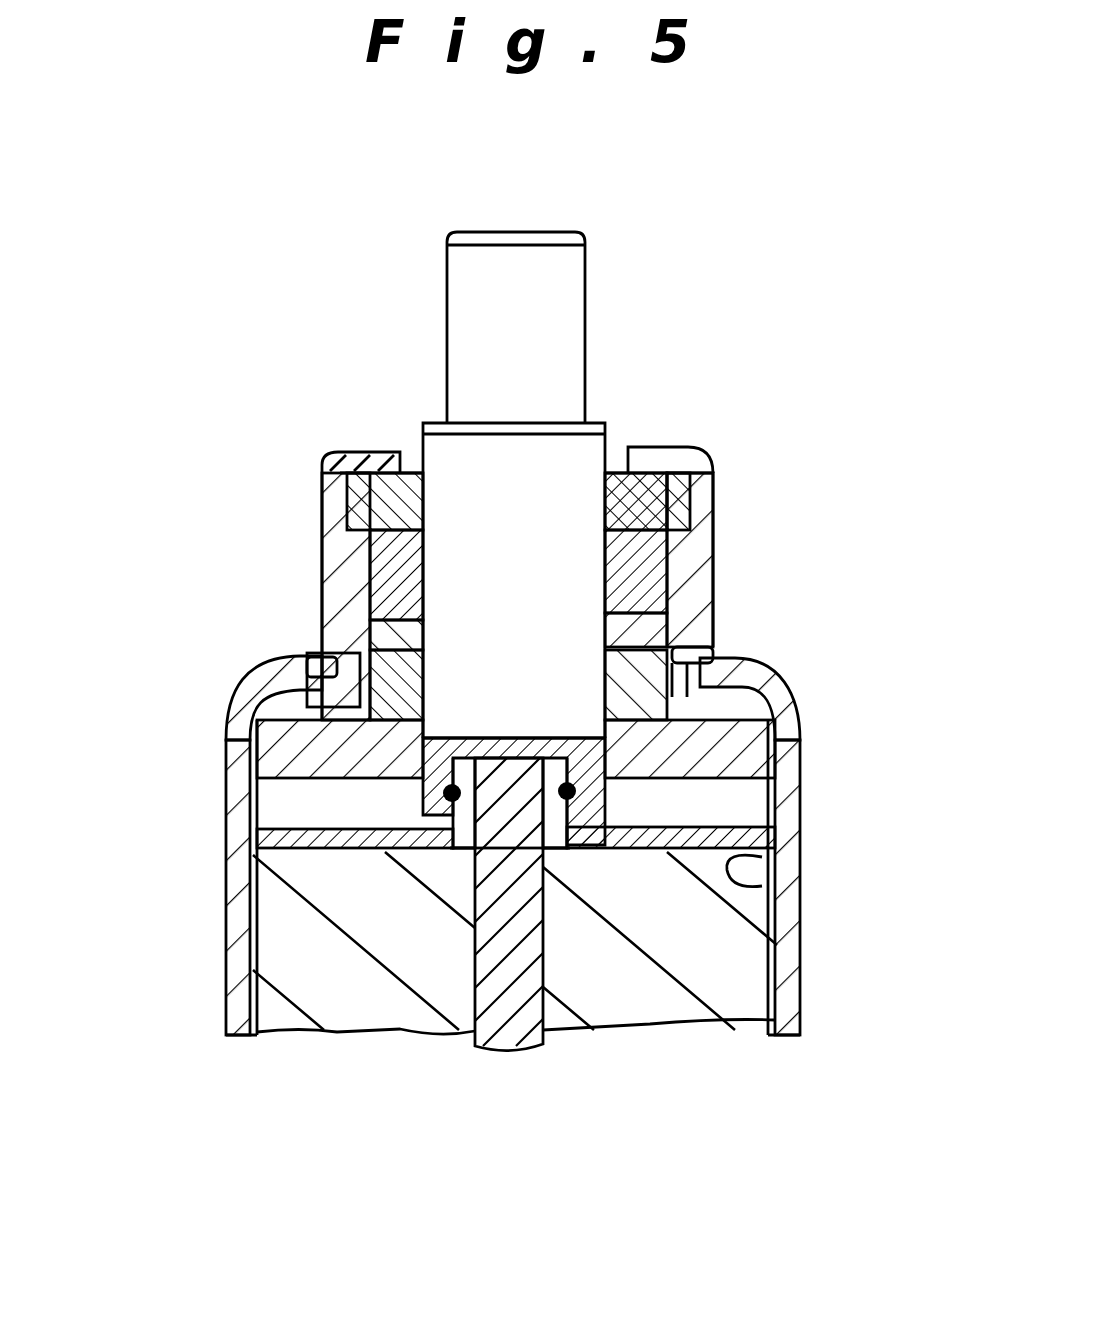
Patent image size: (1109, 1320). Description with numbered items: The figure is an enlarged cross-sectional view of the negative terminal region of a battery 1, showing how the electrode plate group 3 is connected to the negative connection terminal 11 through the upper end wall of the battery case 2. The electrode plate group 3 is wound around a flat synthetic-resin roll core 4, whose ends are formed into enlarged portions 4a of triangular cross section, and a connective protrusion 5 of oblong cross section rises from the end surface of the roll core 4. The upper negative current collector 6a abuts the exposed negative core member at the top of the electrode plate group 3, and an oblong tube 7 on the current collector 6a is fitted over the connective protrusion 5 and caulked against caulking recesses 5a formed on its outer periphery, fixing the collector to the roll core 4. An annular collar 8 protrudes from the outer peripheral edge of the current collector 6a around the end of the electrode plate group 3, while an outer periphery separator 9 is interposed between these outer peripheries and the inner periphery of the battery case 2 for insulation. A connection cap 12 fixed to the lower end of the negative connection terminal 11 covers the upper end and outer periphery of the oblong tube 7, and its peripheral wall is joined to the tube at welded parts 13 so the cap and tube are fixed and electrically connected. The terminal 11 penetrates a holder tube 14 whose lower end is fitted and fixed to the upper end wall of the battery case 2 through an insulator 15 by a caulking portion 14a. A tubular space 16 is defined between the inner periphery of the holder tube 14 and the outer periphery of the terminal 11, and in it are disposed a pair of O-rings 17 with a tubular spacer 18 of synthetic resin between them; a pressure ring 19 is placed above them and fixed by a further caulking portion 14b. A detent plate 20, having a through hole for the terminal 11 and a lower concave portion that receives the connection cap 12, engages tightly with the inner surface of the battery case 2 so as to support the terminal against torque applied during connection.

The battery 1 is at (508, 819).
The battery case 2 is at (798, 1003).
The electrode plate group 3 is at (377, 950).
The roll core 4 is at (517, 1032).
The enlarged portions 4a is at (547, 863).
The connective protrusion 5 is at (447, 850).
The caulking recesses 5a is at (497, 858).
The current collector 6a is at (440, 850).
The oblong tubes 7 is at (417, 850).
The annular collars 8 is at (798, 888).
The outer periphery separator 9 is at (253, 1000).
The negative connection terminal 11 is at (535, 340).
The connection cap 12 is at (520, 742).
The welded parts 13 is at (603, 783).
The holder tube 14 is at (705, 545).
The caulking portion 14a is at (797, 676).
The caulking portion 14b is at (690, 450).
The insulator 15 is at (713, 652).
The tubular space 16 is at (715, 510).
The O-rings 17 is at (690, 478).
The tubular spacer 18 is at (703, 588).
The pressure ring 19 is at (692, 456).
The detent plate 20 is at (722, 739).